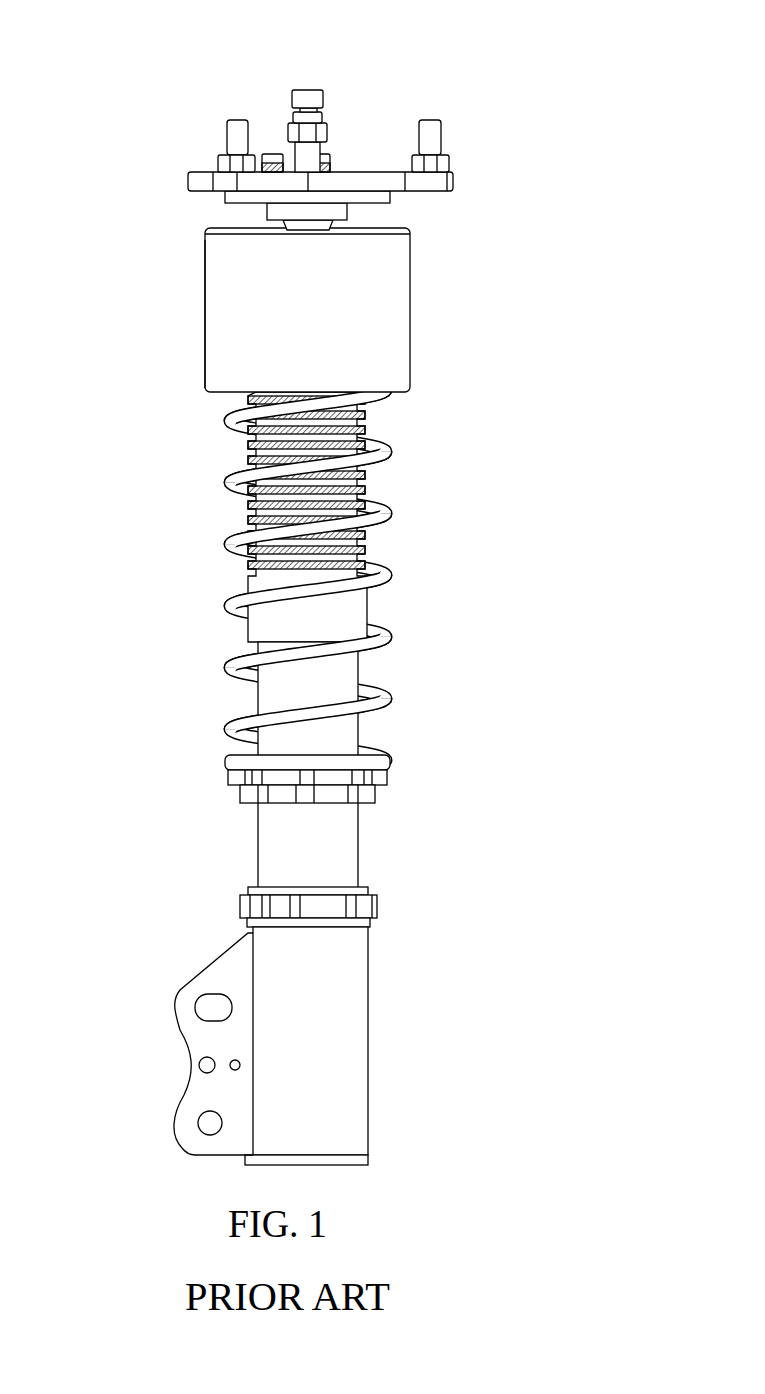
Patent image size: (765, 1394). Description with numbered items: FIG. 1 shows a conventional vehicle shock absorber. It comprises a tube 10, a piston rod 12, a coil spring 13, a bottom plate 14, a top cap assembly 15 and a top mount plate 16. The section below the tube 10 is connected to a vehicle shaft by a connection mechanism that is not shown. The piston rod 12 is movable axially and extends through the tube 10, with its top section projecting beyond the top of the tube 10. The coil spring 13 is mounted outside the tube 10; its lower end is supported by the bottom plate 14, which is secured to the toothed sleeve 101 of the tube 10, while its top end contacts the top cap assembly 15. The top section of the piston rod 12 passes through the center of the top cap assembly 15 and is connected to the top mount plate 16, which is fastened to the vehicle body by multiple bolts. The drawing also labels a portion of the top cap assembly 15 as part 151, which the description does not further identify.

The tube 10 is at (367, 671).
The toothed sleeve 101 is at (337, 830).
The piston rod 12 is at (312, 83).
The coil spring 13 is at (382, 503).
The bottom plate 14 is at (227, 778).
The top cap assembly 15 is at (418, 275).
The housing side wall 151 is at (227, 288).
The top mount plate 16 is at (188, 174).